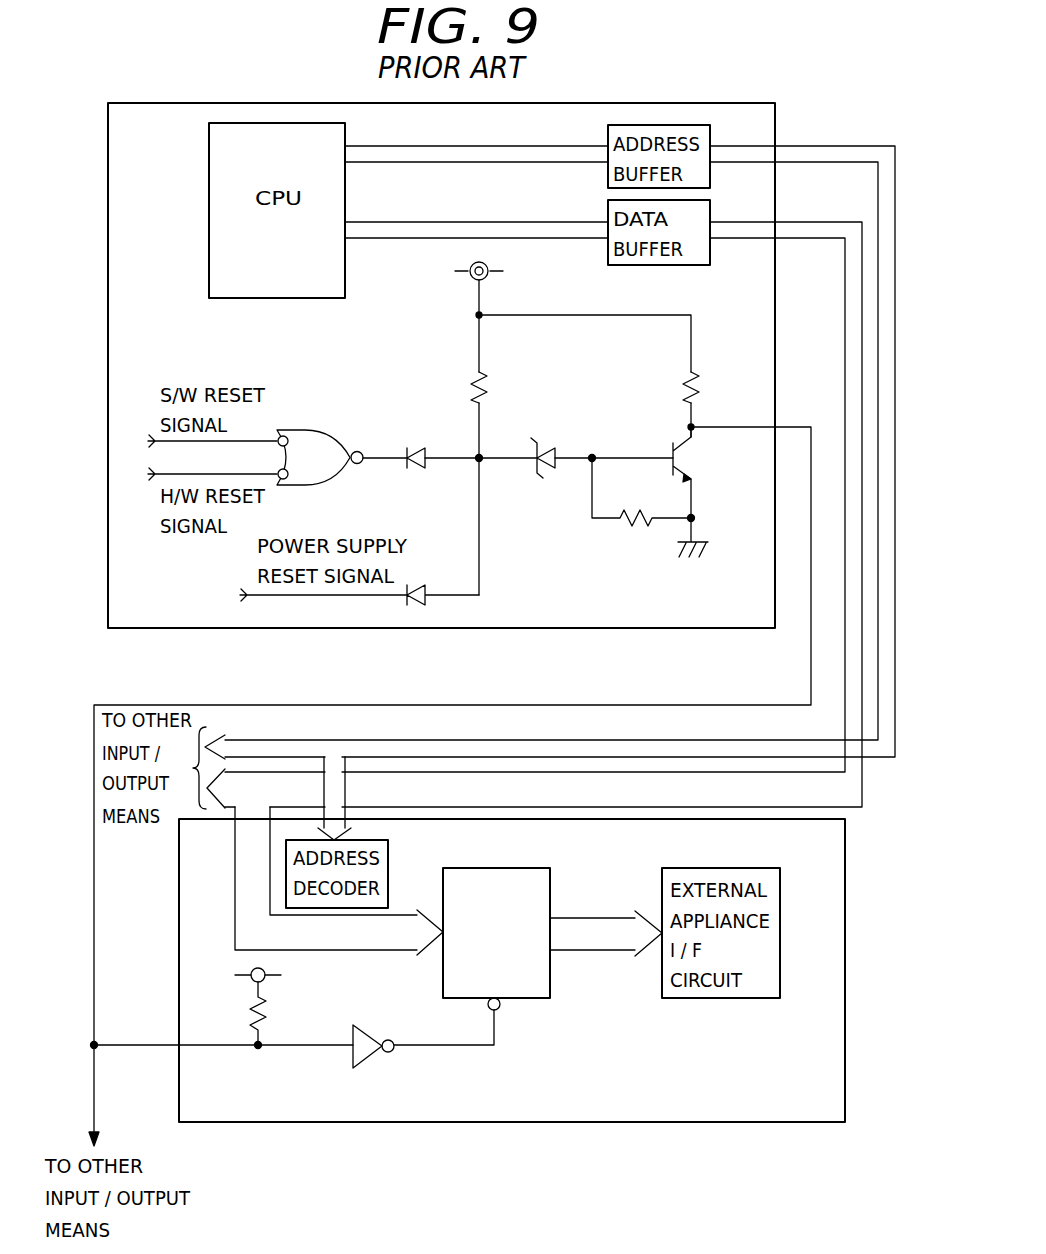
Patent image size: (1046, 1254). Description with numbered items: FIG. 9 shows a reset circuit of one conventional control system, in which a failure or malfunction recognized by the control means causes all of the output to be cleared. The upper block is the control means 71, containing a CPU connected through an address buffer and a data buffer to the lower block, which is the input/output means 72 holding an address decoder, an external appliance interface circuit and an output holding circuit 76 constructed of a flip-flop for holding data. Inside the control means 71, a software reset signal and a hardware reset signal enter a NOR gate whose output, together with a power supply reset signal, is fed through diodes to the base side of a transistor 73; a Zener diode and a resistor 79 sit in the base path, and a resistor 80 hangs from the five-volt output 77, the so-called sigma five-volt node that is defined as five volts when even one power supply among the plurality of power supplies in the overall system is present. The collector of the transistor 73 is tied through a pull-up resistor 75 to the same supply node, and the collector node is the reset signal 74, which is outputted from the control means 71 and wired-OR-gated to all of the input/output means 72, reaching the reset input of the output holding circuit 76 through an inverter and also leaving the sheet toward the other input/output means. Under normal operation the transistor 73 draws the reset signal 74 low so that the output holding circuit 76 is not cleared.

The control means 71 is at (745, 101).
The input/output means 72 is at (848, 846).
The transistor 73 is at (694, 465).
The reset signal 74 is at (718, 706).
The pull-up resistor 75 is at (698, 372).
The output holding circuit 76 is at (553, 878).
The 5V output 77 is at (490, 266).
The resistor 79 is at (628, 532).
The resistor 80 is at (487, 372).